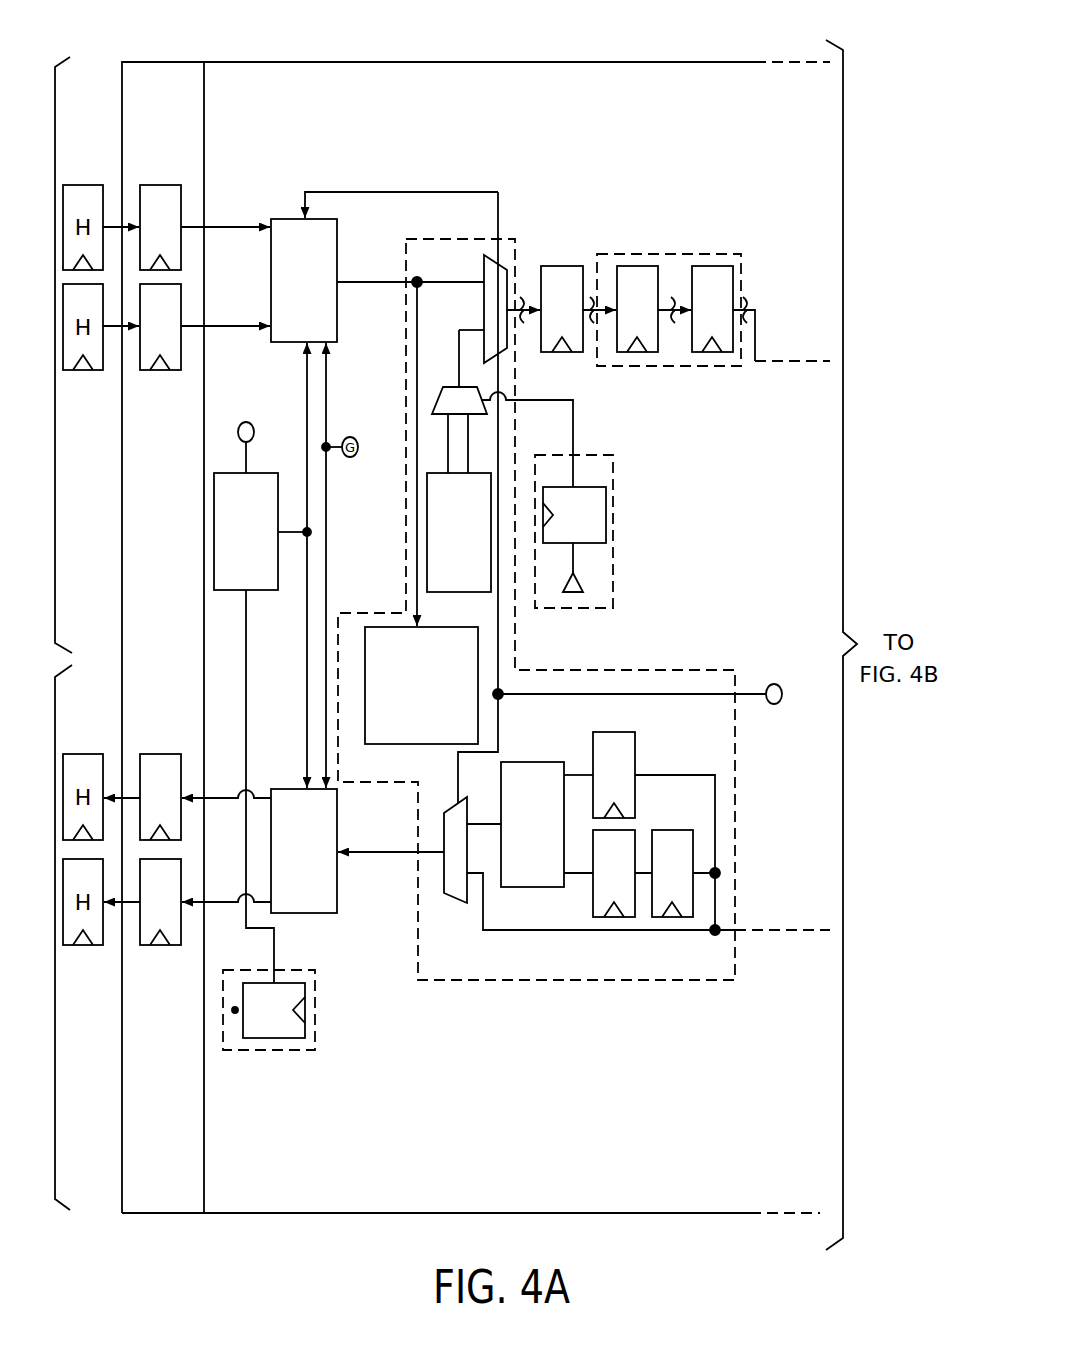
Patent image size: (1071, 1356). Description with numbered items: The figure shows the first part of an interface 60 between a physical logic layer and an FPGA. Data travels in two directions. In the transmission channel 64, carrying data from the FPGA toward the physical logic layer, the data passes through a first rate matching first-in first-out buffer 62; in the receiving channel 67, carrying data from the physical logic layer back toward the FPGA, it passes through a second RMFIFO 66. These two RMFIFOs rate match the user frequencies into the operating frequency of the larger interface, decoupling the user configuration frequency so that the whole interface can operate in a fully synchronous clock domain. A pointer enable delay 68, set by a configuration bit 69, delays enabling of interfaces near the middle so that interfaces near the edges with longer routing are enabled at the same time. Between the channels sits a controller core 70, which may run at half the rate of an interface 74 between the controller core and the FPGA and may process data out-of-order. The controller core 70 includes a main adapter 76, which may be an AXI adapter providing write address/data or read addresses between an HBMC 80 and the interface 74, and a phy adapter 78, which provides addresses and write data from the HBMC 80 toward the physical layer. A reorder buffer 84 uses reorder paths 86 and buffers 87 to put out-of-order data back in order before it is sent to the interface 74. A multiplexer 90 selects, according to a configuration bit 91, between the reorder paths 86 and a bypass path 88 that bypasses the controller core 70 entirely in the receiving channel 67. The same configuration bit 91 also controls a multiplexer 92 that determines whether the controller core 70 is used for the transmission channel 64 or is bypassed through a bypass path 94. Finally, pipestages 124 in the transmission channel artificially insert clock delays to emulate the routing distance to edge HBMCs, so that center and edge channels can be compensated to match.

The interface 60 is at (418, 1231).
The first rate matching first-in first-out buffer 62 is at (337, 262).
The transmission channel 64 is at (55, 115).
The second RMFIFO 66 is at (305, 913).
The receiving channel 67 is at (55, 1160).
The pointer enable delay 68 is at (278, 568).
The configuration bit 69 is at (256, 430).
The controller core 70 is at (617, 986).
The interface 74 is at (150, 1223).
The main adapter 76 is at (420, 745).
The phy adapter 78 is at (436, 592).
The HBMC 80 is at (512, 46).
The reorder buffer 84 is at (520, 761).
The reorder paths 86 is at (715, 826).
The buffers 87 is at (666, 761).
The bypass path 88 is at (615, 933).
The multiplexer 90 is at (455, 903).
The configuration bit 91 is at (783, 692).
The multiplexer 92 is at (509, 284).
The bypass path 94 is at (465, 280).
The pipestages 124 is at (668, 252).